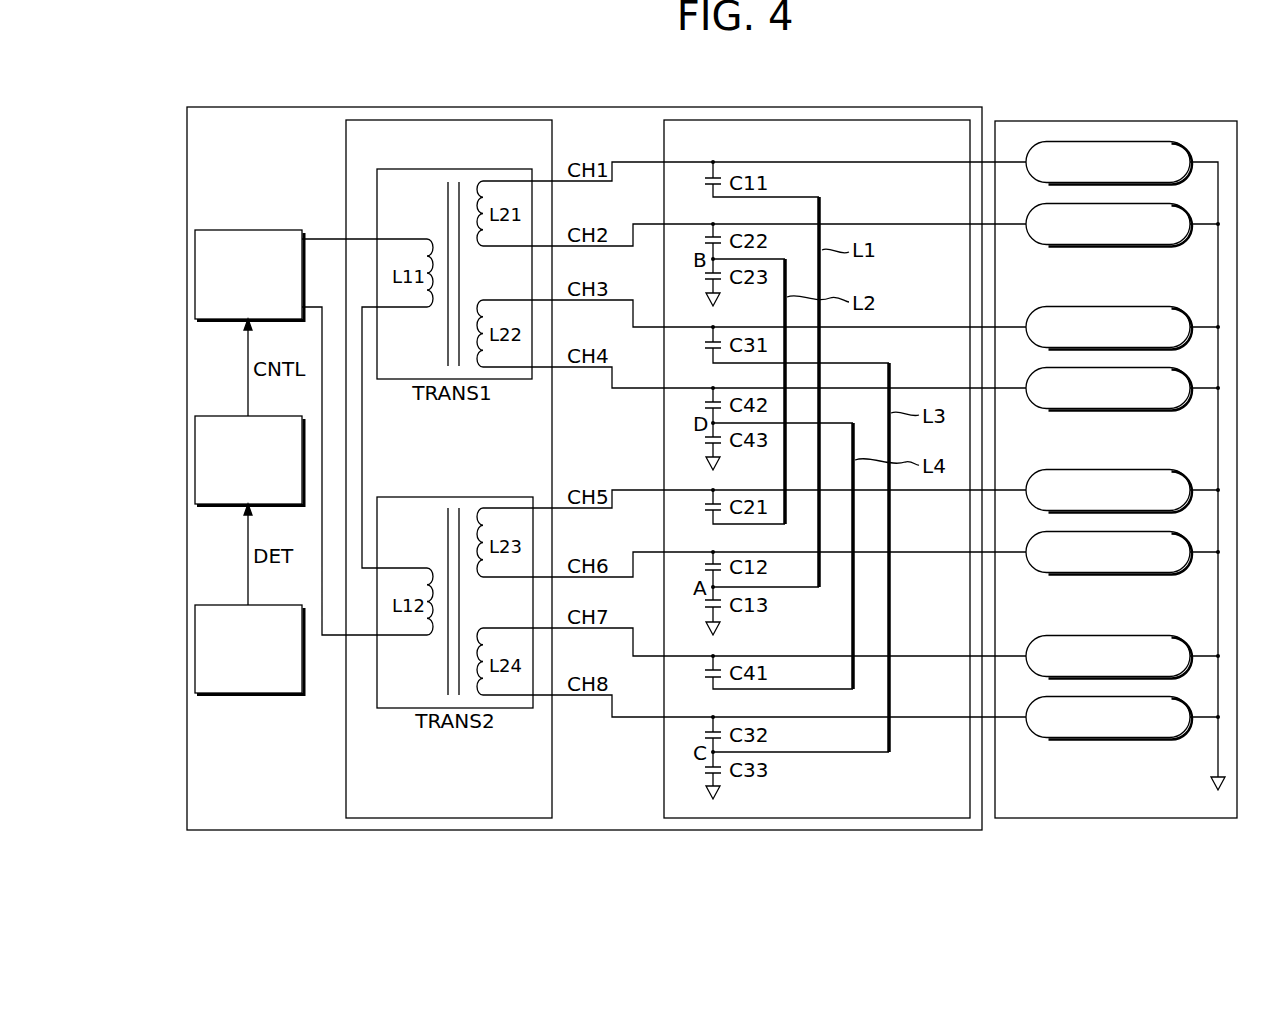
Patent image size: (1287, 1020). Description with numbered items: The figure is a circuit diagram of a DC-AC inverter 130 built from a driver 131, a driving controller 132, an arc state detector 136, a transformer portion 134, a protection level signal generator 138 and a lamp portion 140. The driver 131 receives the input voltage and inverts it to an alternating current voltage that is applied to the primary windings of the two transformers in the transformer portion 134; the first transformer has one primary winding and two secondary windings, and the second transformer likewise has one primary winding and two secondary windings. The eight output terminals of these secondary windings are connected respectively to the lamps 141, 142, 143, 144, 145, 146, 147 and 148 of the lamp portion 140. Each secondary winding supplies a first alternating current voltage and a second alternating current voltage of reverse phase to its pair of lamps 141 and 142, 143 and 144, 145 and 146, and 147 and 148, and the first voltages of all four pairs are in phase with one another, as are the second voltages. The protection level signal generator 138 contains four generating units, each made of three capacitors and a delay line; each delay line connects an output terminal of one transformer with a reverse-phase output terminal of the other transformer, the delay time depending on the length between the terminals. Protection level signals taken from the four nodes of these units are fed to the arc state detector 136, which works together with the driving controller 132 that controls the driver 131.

The DC-AC inverter 130 is at (535, 107).
The driver 131 is at (195, 275).
The driving controller 132 is at (195, 462).
The transformer portion 134 is at (438, 120).
The arc state detector 136 is at (195, 650).
The protection level signal generator 138 is at (798, 120).
The lamp portion 140 is at (1120, 121).
The lamp 141 is at (1186, 150).
The lamp 142 is at (1186, 212).
The lamp 143 is at (1186, 315).
The lamp 144 is at (1186, 376).
The lamp 145 is at (1186, 478).
The lamp 146 is at (1186, 540).
The lamp 147 is at (1186, 644).
The lamp 148 is at (1186, 705).